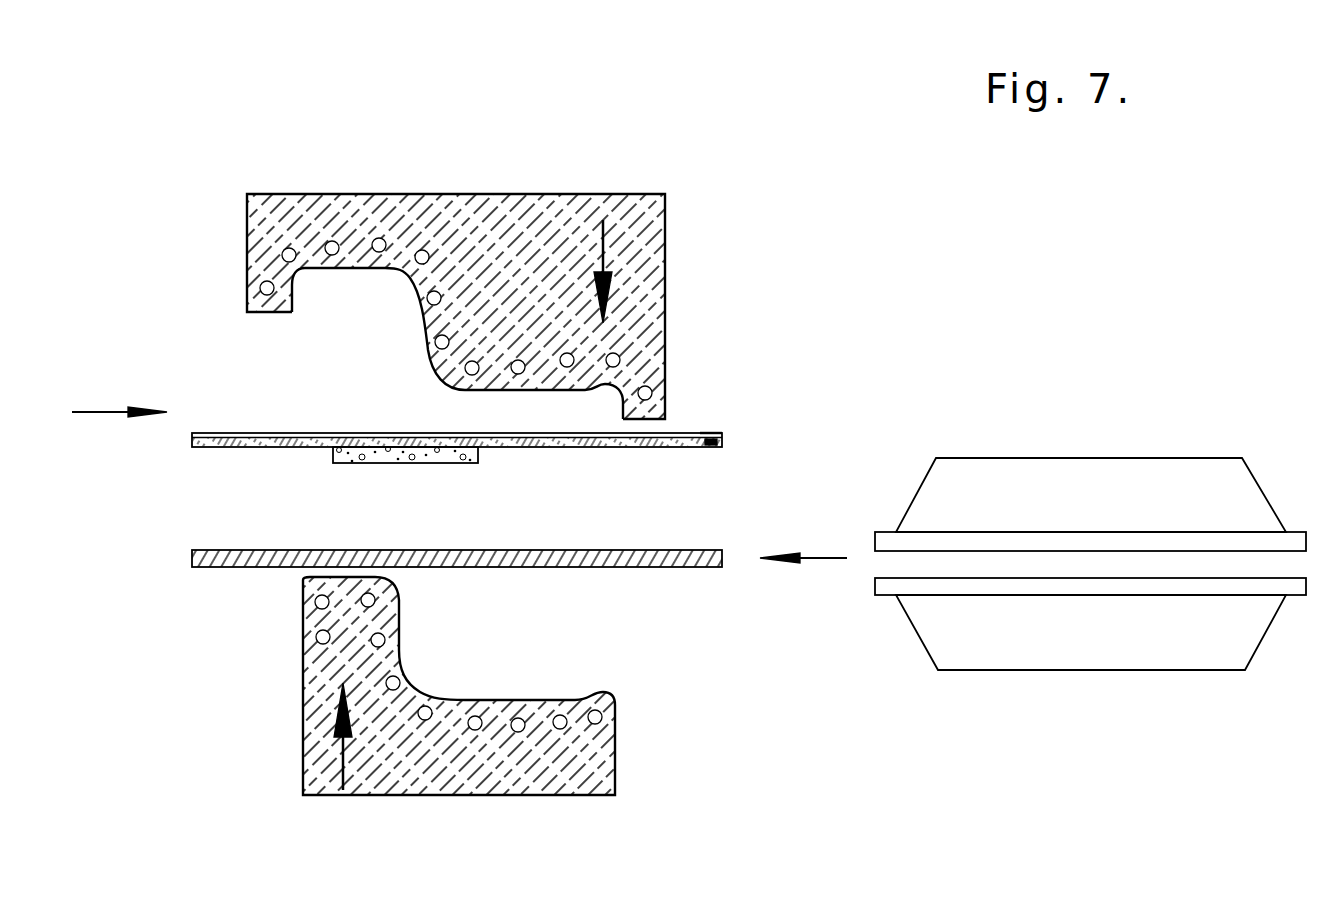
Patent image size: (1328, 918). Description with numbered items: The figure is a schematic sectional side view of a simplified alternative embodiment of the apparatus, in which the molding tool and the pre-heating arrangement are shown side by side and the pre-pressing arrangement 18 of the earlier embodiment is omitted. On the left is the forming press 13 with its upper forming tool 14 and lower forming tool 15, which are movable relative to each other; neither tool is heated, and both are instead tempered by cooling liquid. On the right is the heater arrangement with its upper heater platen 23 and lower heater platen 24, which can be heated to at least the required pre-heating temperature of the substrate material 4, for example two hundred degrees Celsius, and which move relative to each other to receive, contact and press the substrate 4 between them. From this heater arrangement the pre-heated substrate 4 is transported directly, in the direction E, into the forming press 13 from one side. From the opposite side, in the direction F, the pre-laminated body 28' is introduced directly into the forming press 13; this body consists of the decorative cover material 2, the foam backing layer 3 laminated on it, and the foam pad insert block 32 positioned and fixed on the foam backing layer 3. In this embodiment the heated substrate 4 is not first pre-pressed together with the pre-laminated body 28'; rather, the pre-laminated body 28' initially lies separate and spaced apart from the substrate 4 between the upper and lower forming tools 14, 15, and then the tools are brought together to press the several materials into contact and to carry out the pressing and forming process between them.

The forming press 13 is at (213, 232).
The upper forming tool 14 is at (645, 252).
The lower forming tool 15 is at (597, 770).
The pre-pressing arrangement 18 is at (415, 678).
The decorative cover material 2 is at (687, 430).
The foam backing layer 3 is at (712, 446).
The structural substrate 4 is at (670, 557).
The pre-laminated body 28' is at (758, 385).
The foam pad insert block 32 is at (447, 455).
The upper heater platen 23 is at (1045, 490).
The lower heater platen 24 is at (1057, 639).
The direction F is at (87, 412).
The direction E is at (830, 558).